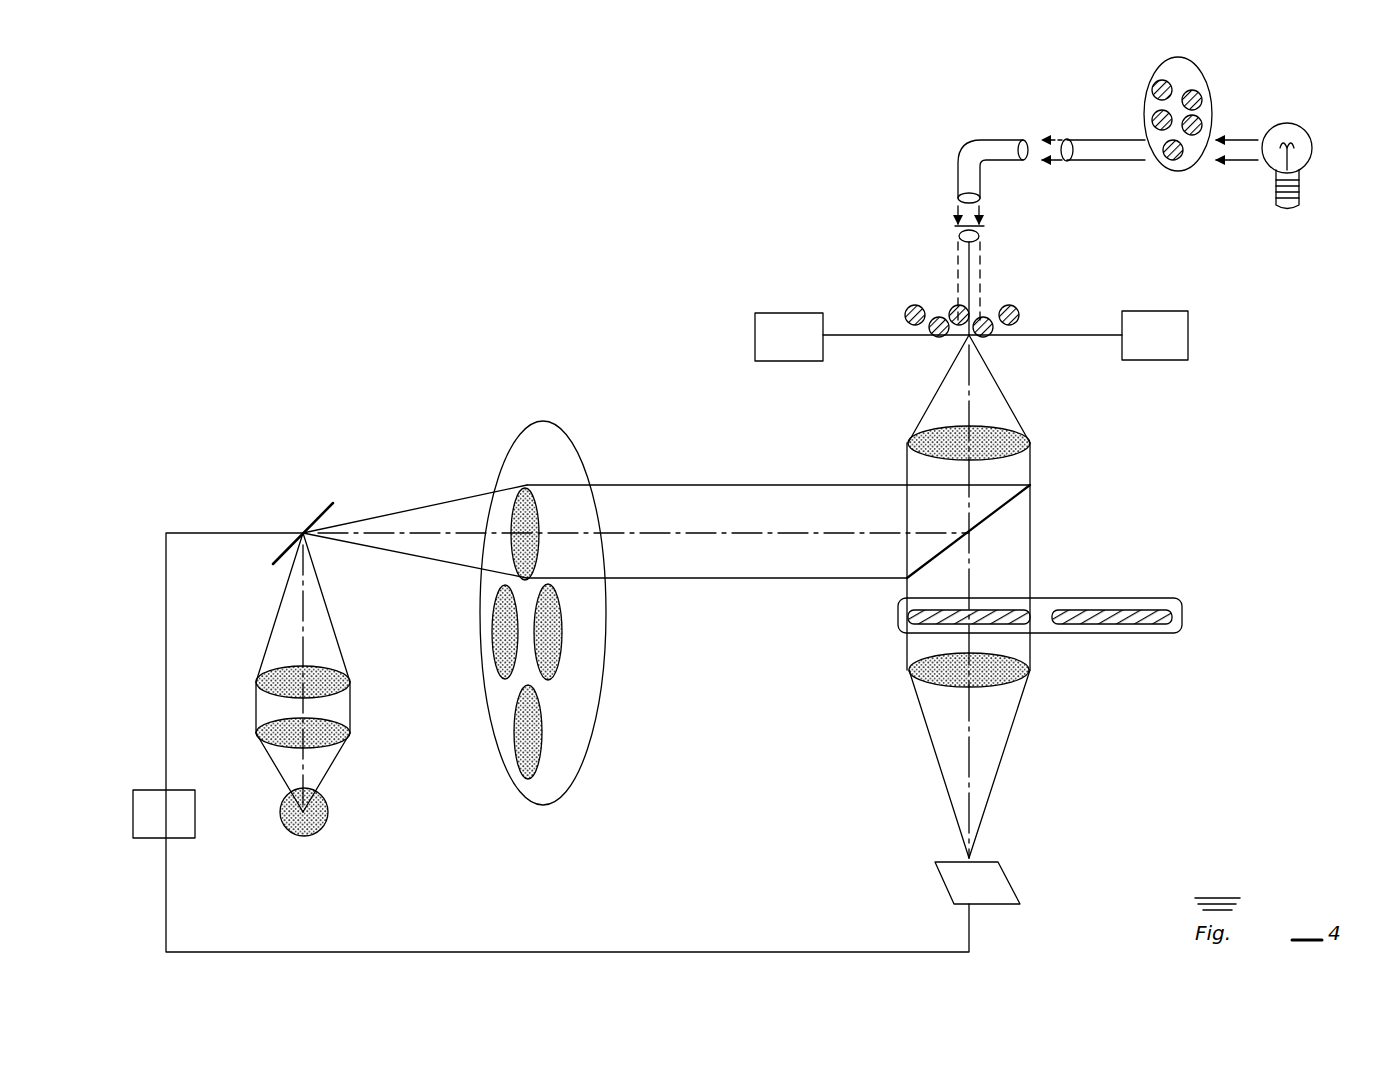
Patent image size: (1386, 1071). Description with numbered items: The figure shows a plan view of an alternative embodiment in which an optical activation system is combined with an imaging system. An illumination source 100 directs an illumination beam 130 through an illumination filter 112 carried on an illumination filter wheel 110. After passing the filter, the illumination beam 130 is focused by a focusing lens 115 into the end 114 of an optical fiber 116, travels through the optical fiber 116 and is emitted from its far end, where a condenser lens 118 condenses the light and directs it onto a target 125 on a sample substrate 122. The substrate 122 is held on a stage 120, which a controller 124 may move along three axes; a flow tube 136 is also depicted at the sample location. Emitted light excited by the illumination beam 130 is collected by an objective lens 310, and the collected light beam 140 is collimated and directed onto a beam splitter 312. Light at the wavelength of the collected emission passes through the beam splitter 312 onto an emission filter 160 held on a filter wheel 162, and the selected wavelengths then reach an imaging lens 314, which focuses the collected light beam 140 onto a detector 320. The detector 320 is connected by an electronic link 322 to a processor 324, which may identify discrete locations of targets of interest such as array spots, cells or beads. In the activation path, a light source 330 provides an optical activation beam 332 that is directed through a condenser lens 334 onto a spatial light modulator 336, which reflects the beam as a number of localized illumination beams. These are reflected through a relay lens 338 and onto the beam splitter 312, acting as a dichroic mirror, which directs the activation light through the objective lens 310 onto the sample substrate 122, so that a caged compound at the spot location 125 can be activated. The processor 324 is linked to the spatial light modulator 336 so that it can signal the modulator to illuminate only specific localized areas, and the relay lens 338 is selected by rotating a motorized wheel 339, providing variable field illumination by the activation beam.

The illumination source 100 is at (1313, 150).
The illumination filter wheel 110 is at (1211, 100).
The illumination filter 112 is at (1170, 168).
The end of optical fiber 114 is at (1023, 140).
The focusing lens 115 is at (1067, 139).
The optical fiber 116 is at (958, 172).
The condenser lens 118 is at (980, 236).
The stage 120 is at (1155, 360).
The sample substrate 122 is at (922, 340).
The controller 124 is at (805, 348).
The target 125 is at (985, 338).
The illumination beam 130 is at (1100, 140).
The flow tube 136 is at (980, 295).
The collected light beam 140 is at (1030, 455).
The emission filter 160 is at (905, 622).
The filter wheel 162 is at (1100, 634).
The objective lens 310 is at (908, 443).
The beam splitter 312 is at (985, 512).
The imaging lens 314 is at (908, 670).
The detector 320 is at (942, 882).
The electronic link 322 is at (570, 952).
The processor 324 is at (180, 827).
The light source 330 is at (305, 836).
The optical activation beam 332 is at (322, 786).
The condenser lens 334 is at (362, 668).
The spatial light modulator 336 is at (318, 512).
The relay lens 338 is at (527, 488).
The motorized wheel 339 is at (598, 708).